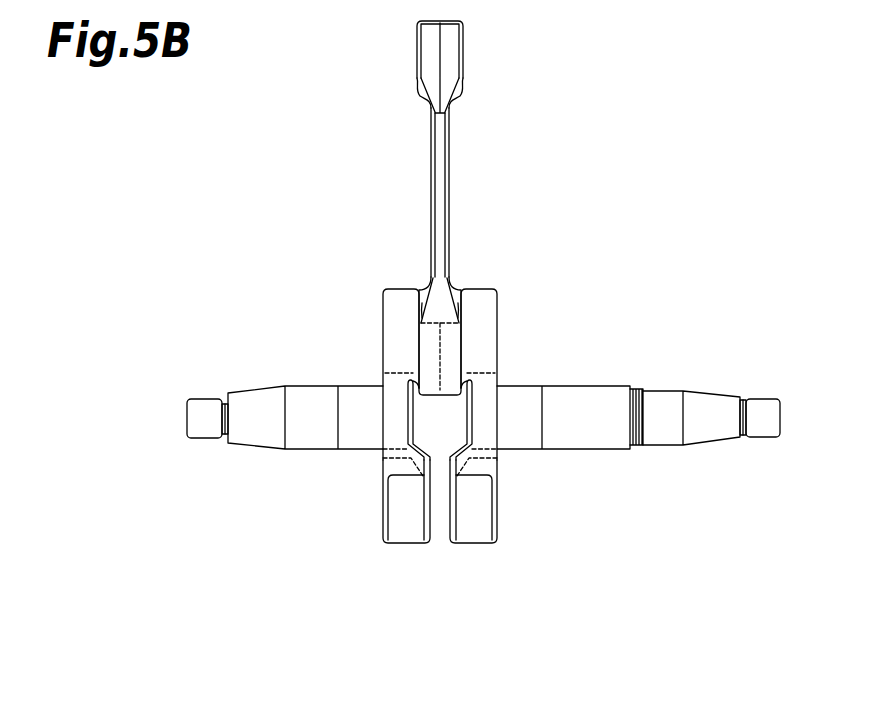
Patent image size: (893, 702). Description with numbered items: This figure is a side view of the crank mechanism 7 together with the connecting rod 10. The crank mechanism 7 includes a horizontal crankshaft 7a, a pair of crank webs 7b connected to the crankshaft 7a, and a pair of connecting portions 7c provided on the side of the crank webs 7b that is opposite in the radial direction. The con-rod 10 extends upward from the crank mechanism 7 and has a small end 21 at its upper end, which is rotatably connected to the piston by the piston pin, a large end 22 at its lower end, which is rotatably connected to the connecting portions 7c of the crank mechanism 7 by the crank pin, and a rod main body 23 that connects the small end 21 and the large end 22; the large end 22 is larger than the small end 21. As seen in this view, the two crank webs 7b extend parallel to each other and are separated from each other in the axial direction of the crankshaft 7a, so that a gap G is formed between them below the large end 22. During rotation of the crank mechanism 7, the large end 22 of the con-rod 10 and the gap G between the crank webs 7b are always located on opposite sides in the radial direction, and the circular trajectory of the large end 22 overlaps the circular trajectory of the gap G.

The connecting rod 10 is at (414, 130).
The small end 21 is at (449, 52).
The large end 22 is at (428, 350).
The rod main body 23 is at (450, 182).
The crank mechanism 7 is at (270, 498).
The crankshaft 7a is at (605, 435).
The crank webs 7b is at (408, 515).
The connecting portions 7c is at (480, 328).
The gap G is at (439, 533).